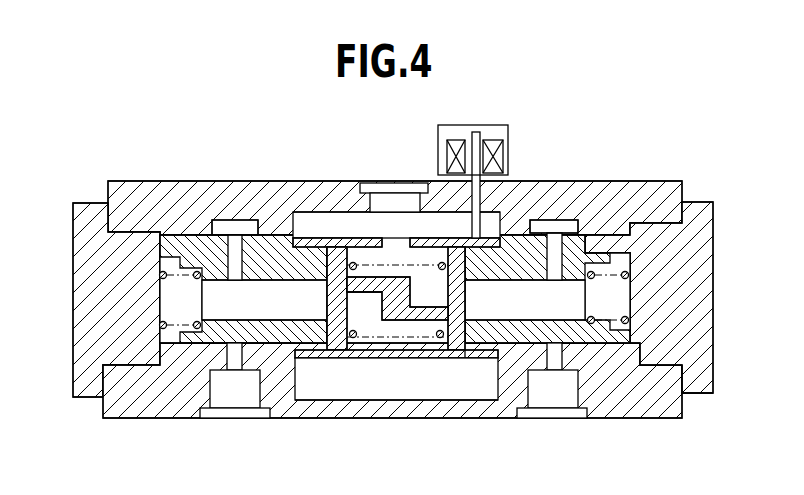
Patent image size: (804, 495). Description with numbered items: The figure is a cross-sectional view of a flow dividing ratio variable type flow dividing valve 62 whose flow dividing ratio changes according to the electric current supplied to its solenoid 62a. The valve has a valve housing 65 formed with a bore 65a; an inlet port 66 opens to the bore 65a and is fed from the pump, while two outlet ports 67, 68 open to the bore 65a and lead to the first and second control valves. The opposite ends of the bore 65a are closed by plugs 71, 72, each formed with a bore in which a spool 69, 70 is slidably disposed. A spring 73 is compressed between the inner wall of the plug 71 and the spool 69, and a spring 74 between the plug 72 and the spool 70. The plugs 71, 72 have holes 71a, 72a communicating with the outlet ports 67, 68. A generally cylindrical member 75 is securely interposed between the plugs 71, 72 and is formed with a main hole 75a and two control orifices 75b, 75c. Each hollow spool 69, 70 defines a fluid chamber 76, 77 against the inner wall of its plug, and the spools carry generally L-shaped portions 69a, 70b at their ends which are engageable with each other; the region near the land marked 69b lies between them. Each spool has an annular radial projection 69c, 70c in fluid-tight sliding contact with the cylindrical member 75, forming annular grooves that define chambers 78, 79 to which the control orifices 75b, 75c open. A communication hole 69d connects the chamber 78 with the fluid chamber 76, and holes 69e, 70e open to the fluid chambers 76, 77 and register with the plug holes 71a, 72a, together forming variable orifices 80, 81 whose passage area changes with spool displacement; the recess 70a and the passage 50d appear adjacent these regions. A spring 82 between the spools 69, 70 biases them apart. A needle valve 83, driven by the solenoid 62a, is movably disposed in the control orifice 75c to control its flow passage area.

The flow dividing ratio variable type flow dividing valve 62 is at (489, 113).
The solenoid 62a is at (504, 148).
The valve housing 65 is at (655, 193).
The bore 65a is at (482, 398).
The inlet port 66 is at (379, 183).
The outlet port 67 is at (258, 405).
The outlet port 68 is at (534, 398).
The spool 69 is at (192, 340).
The generally L-shaped portion 69a is at (287, 352).
The inner land 69b is at (400, 297).
The annular radial projection 69c is at (338, 246).
The communication hole 69d is at (313, 267).
The hole 69e is at (222, 263).
The spool 70 is at (603, 343).
The bolt recess 70a is at (552, 343).
The generally L-shaped portion 70b is at (406, 338).
The annular radial projection 70c is at (452, 340).
The hole 70e is at (561, 267).
The plug 71 is at (73, 271).
The hole 71a is at (238, 350).
The plug 72 is at (702, 222).
The hole 72a is at (562, 358).
The spring 73 is at (163, 327).
The spring 74 is at (713, 325).
The generally cylindrical member 75 is at (378, 360).
The main hole 75a is at (405, 212).
The control orifice 75b is at (303, 232).
The control orifice 75c is at (474, 238).
The fluid chamber 76 is at (162, 300).
The fluid chamber 77 is at (628, 290).
The chamber 78 is at (396, 379).
The chamber 79 is at (472, 345).
The variable orifice 80 is at (262, 320).
The variable orifice 81 is at (546, 321).
The spring 82 is at (351, 338).
The needle valve 83 is at (483, 186).
The right chamber 50d is at (525, 300).